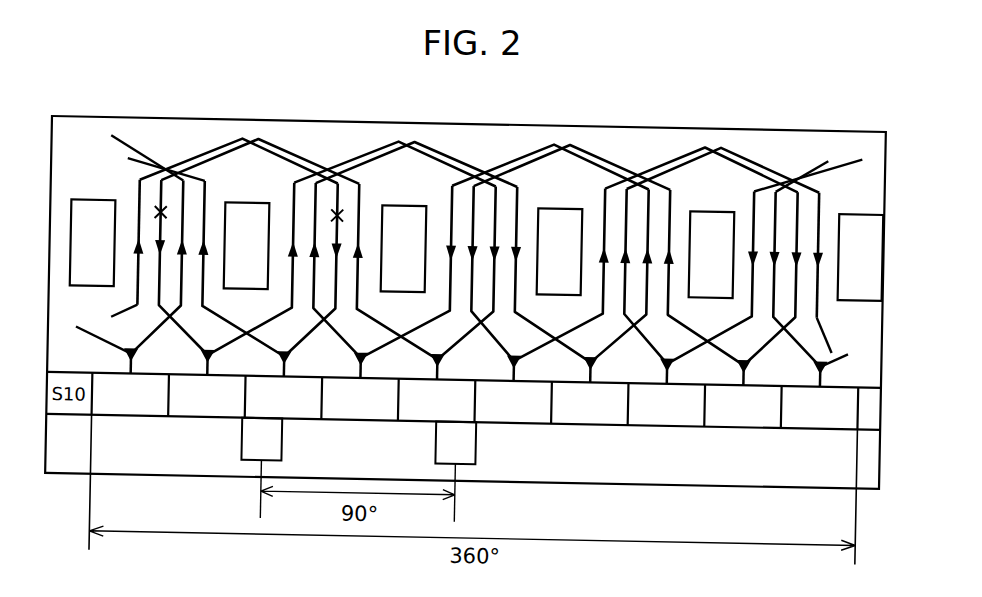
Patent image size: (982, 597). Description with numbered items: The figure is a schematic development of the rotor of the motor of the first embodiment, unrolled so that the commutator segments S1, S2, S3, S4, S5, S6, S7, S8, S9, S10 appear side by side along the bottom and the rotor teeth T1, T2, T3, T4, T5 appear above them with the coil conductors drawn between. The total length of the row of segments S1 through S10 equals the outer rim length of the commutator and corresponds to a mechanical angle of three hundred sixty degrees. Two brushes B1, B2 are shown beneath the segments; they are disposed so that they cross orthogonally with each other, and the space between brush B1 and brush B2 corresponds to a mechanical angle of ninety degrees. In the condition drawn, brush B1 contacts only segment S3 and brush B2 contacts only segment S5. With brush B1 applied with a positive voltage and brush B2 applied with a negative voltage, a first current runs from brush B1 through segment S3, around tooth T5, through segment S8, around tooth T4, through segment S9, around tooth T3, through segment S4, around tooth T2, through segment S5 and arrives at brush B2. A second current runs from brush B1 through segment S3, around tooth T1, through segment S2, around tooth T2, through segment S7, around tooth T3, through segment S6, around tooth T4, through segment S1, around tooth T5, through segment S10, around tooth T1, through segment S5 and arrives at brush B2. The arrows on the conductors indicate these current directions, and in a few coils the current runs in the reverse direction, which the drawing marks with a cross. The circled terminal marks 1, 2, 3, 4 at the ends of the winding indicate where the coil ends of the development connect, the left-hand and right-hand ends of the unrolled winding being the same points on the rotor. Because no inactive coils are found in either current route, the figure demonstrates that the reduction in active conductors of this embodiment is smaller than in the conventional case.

The terminal 1 is at (461, 340).
The terminal 2 is at (487, 157).
The terminal 3 is at (468, 338).
The terminal 4 is at (477, 162).
The tooth T1 is at (247, 245).
The tooth T2 is at (404, 248).
The tooth T3 is at (560, 251).
The tooth T4 is at (712, 254).
The tooth T5 is at (477, 250).
The segment S1 is at (130, 394).
The segment S2 is at (207, 396).
The segment S3 is at (283, 397).
The segment S4 is at (360, 399).
The segment S5 is at (436, 400).
The segment S6 is at (513, 402).
The segment S7 is at (589, 403).
The segment S8 is at (666, 405).
The segment S9 is at (743, 406).
The segment S10 is at (819, 407).
The brush B1 is at (261, 468).
The brush B2 is at (455, 471).